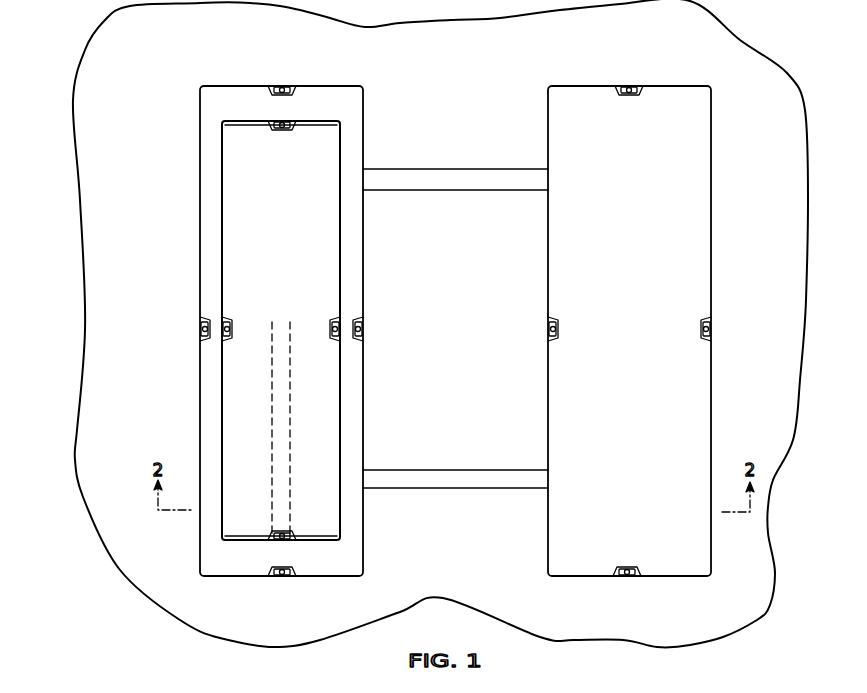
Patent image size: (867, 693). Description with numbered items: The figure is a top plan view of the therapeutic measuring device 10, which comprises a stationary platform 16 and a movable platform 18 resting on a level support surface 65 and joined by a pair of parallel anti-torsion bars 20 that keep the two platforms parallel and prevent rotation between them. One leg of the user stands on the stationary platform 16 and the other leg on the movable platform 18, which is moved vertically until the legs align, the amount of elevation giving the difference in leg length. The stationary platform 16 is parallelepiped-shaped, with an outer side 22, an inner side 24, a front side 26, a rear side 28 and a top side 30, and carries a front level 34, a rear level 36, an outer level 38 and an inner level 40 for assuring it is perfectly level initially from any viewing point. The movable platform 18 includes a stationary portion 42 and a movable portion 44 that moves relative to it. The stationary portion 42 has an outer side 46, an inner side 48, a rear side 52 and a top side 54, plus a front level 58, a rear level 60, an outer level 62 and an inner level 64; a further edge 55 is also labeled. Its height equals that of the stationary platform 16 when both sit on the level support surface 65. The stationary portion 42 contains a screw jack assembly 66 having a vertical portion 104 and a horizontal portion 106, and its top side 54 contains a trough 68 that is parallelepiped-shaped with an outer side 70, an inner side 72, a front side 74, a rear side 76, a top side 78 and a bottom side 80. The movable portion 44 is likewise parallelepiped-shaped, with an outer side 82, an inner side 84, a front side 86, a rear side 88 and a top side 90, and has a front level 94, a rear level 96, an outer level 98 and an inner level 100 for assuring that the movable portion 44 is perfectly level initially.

The therapeutic measuring device 10 is at (440, 323).
The stationary platform 16 is at (711, 190).
The movable platform 18 is at (200, 177).
The anti-torsion bars 20 is at (473, 192).
The outer side 22 is at (711, 285).
The inner side 24 is at (548, 420).
The front side 26 is at (570, 576).
The rear side 28 is at (575, 86).
The top side 30 is at (614, 231).
The front level 34 is at (628, 576).
The rear level 36 is at (628, 86).
The outer level 38 is at (711, 330).
The inner level 40 is at (548, 325).
The stationary portion 42 is at (218, 392).
The movable portion 44 is at (268, 428).
The outer side 46 is at (200, 362).
The inner side 48 is at (363, 405).
The rear side 52 is at (224, 86).
The top side 54 is at (243, 108).
The bottom wall 55 is at (215, 577).
The front level 58 is at (282, 577).
The rear level 60 is at (282, 86).
The outer level 62 is at (200, 326).
The inner level 64 is at (363, 290).
The level support surface 65 is at (437, 121).
The screw jack assembly 66 is at (277, 318).
The trough 68 is at (222, 186).
The outer side 70 is at (224, 250).
The inner side 72 is at (340, 272).
The front side 74 is at (258, 538).
The rear side 76 is at (310, 124).
The top side 78 is at (236, 132).
The bottom side 80 is at (235, 512).
The outer side 82 is at (222, 218).
The inner side 84 is at (340, 222).
The front side 86 is at (318, 542).
The rear side 88 is at (324, 119).
The top side 90 is at (276, 218).
The front level 94 is at (316, 493).
The rear level 96 is at (282, 133).
The outer level 98 is at (235, 330).
The inner level 100 is at (300, 428).
The vertical portion 104 is at (283, 314).
The horizontal portion 106 is at (318, 429).